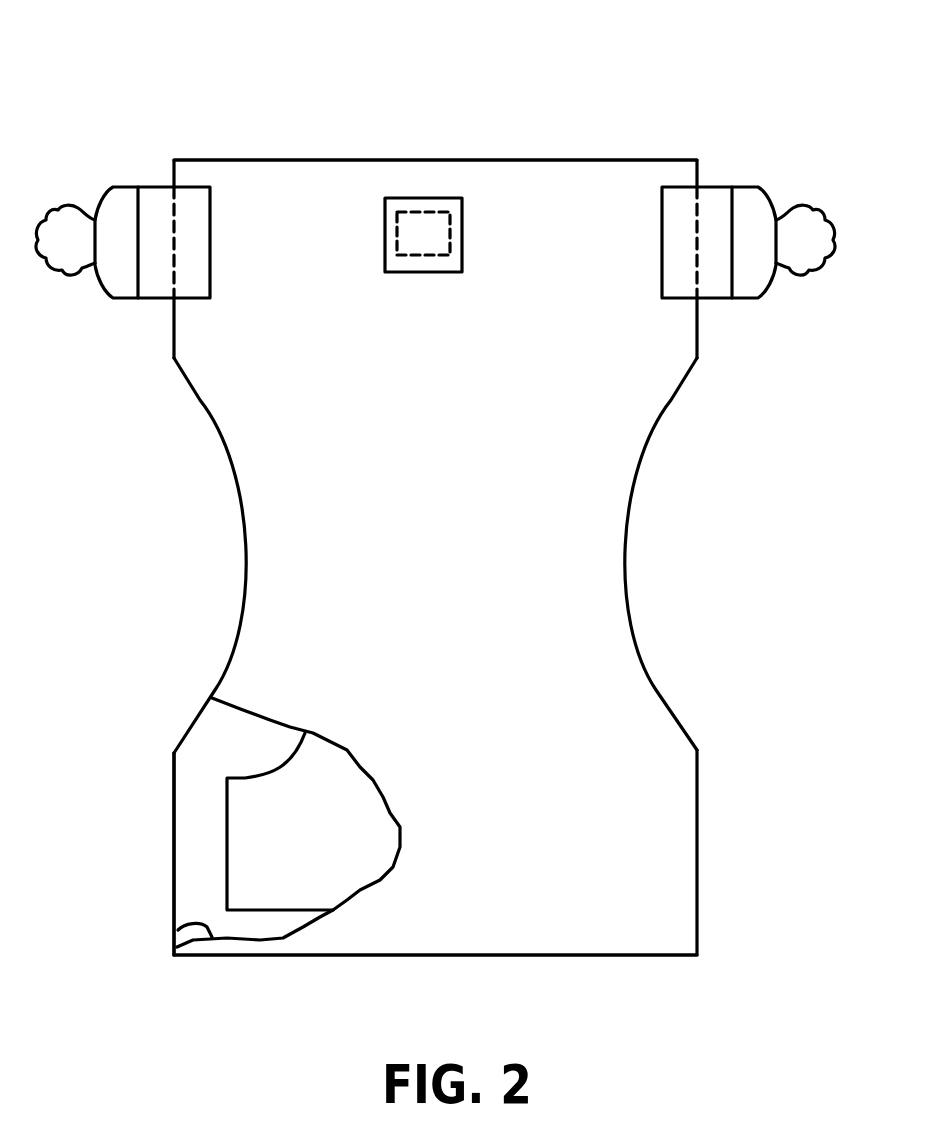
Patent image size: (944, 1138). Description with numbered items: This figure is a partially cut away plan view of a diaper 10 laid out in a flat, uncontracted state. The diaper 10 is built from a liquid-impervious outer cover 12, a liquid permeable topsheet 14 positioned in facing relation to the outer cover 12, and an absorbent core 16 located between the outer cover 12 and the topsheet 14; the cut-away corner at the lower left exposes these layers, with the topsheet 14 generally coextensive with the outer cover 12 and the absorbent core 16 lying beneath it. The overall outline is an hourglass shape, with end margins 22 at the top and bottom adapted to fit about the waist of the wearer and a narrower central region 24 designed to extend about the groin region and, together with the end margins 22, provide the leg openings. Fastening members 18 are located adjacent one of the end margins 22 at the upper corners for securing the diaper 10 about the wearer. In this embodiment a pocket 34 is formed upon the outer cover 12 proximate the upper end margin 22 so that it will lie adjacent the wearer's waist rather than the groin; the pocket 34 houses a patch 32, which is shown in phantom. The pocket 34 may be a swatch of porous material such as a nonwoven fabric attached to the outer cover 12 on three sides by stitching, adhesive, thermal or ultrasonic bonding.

The diaper 10 is at (253, 68).
The outer cover 12 is at (177, 929).
The topsheet 14 is at (174, 855).
The absorbent core 16 is at (307, 853).
The fastening members 18 is at (148, 187).
The end margins 22 is at (756, 336).
The central region 24 is at (712, 536).
The patch 32 is at (430, 230).
The pocket 34 is at (405, 198).